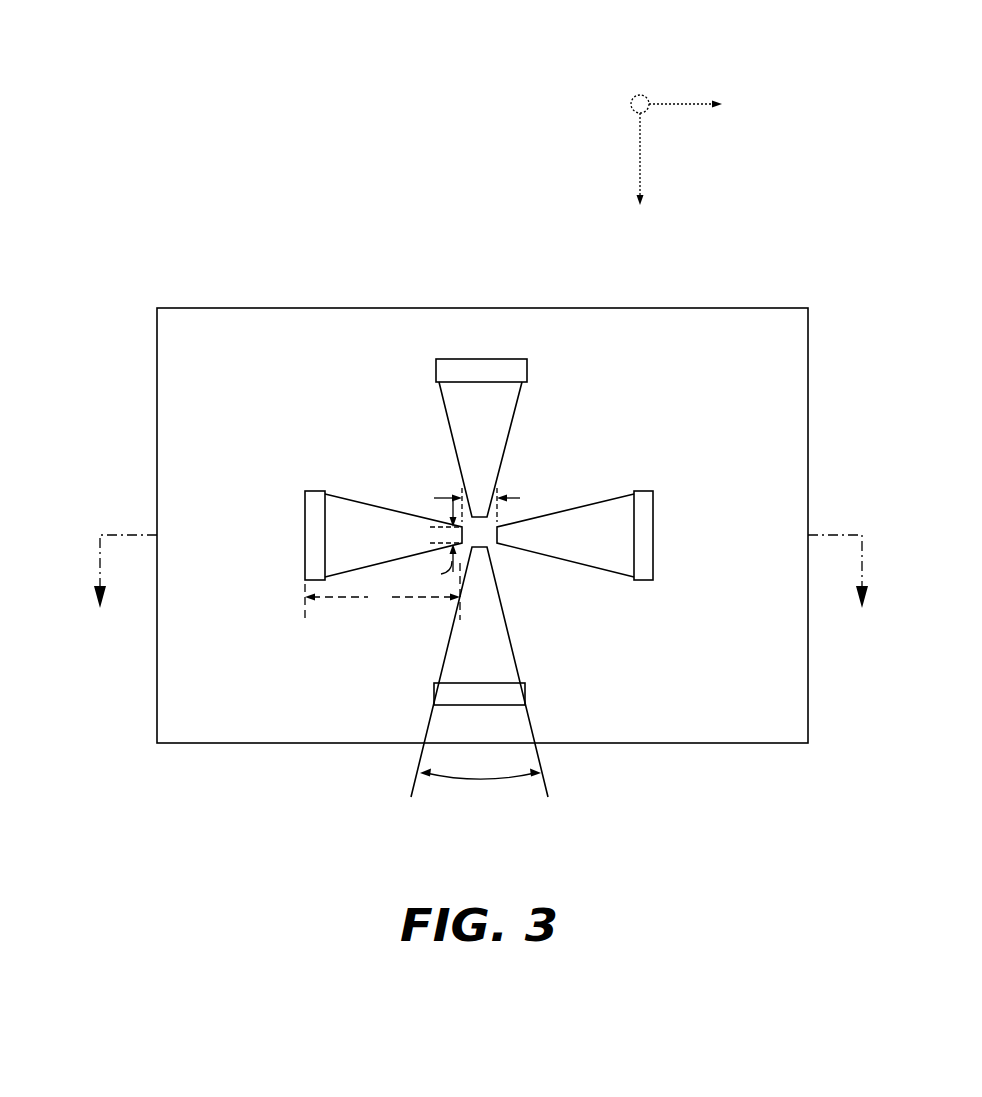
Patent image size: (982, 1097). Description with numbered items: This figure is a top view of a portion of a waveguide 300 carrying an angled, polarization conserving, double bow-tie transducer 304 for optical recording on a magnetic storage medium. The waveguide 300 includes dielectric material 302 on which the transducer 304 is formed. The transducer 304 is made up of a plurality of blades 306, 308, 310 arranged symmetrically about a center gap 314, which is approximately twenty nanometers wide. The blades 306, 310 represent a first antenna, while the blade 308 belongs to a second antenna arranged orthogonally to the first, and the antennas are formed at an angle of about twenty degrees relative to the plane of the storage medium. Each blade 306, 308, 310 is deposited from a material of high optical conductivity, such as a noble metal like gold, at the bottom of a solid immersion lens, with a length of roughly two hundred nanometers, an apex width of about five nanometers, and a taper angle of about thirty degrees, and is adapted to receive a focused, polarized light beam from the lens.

The waveguide 300 is at (106, 34).
The dielectric material 302 is at (237, 308).
The transducer 304 is at (560, 386).
The blade 306 is at (436, 371).
The blade 308 is at (305, 491).
The blade 310 is at (608, 573).
The center gap 314 is at (410, 450).